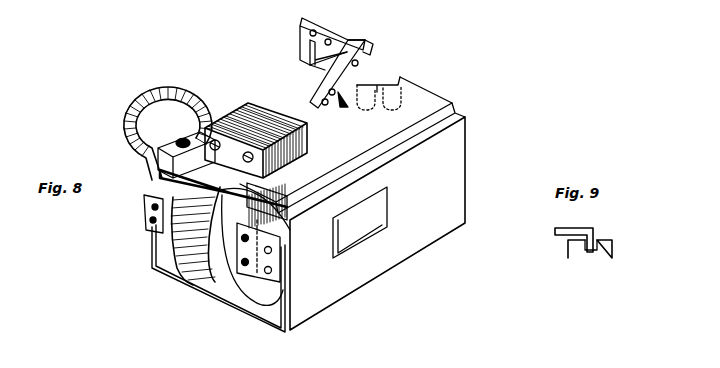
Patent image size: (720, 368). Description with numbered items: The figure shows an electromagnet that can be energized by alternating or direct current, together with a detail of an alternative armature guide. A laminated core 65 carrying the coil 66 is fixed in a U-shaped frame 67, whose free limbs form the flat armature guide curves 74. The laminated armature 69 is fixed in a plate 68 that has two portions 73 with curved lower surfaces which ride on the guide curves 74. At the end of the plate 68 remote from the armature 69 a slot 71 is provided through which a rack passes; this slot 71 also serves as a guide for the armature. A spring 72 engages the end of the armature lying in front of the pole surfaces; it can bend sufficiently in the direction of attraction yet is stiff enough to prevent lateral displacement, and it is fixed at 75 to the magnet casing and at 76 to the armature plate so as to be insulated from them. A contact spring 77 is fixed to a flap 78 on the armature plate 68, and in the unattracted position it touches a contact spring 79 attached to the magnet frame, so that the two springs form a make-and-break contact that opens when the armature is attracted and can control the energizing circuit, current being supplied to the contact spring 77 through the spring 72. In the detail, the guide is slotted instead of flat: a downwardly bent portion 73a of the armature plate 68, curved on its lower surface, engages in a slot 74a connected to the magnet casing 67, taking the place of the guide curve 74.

In FIG. 8, the laminated core 65 is at (223, 210).
In FIG. 8, the coil 66 is at (215, 283).
In FIG. 8, the U-shaped frame 67 is at (457, 190).
In FIG. 8, the plate 68 is at (348, 147).
In FIG. 9, the plate 68 is at (573, 228).
In FIG. 8, the laminated armature 69 is at (240, 118).
In FIG. 8, the slot 71 is at (383, 83).
In FIG. 8, the spring 72 is at (133, 111).
In FIG. 8, the portions 73 is at (455, 110).
In FIG. 8, the armature guide curves 74 is at (410, 142).
In FIG. 8, the fixing point on magnet casing 75 is at (143, 213).
In FIG. 8, the fixing point on armature plate 76 is at (178, 137).
In FIG. 8, the contact spring 77 is at (338, 80).
In FIG. 8, the flap 78 is at (322, 95).
In FIG. 8, the contact spring 79 is at (340, 26).
In FIG. 9, the downwardly bent portion 73a is at (595, 234).
In FIG. 9, the slot 74a is at (607, 248).